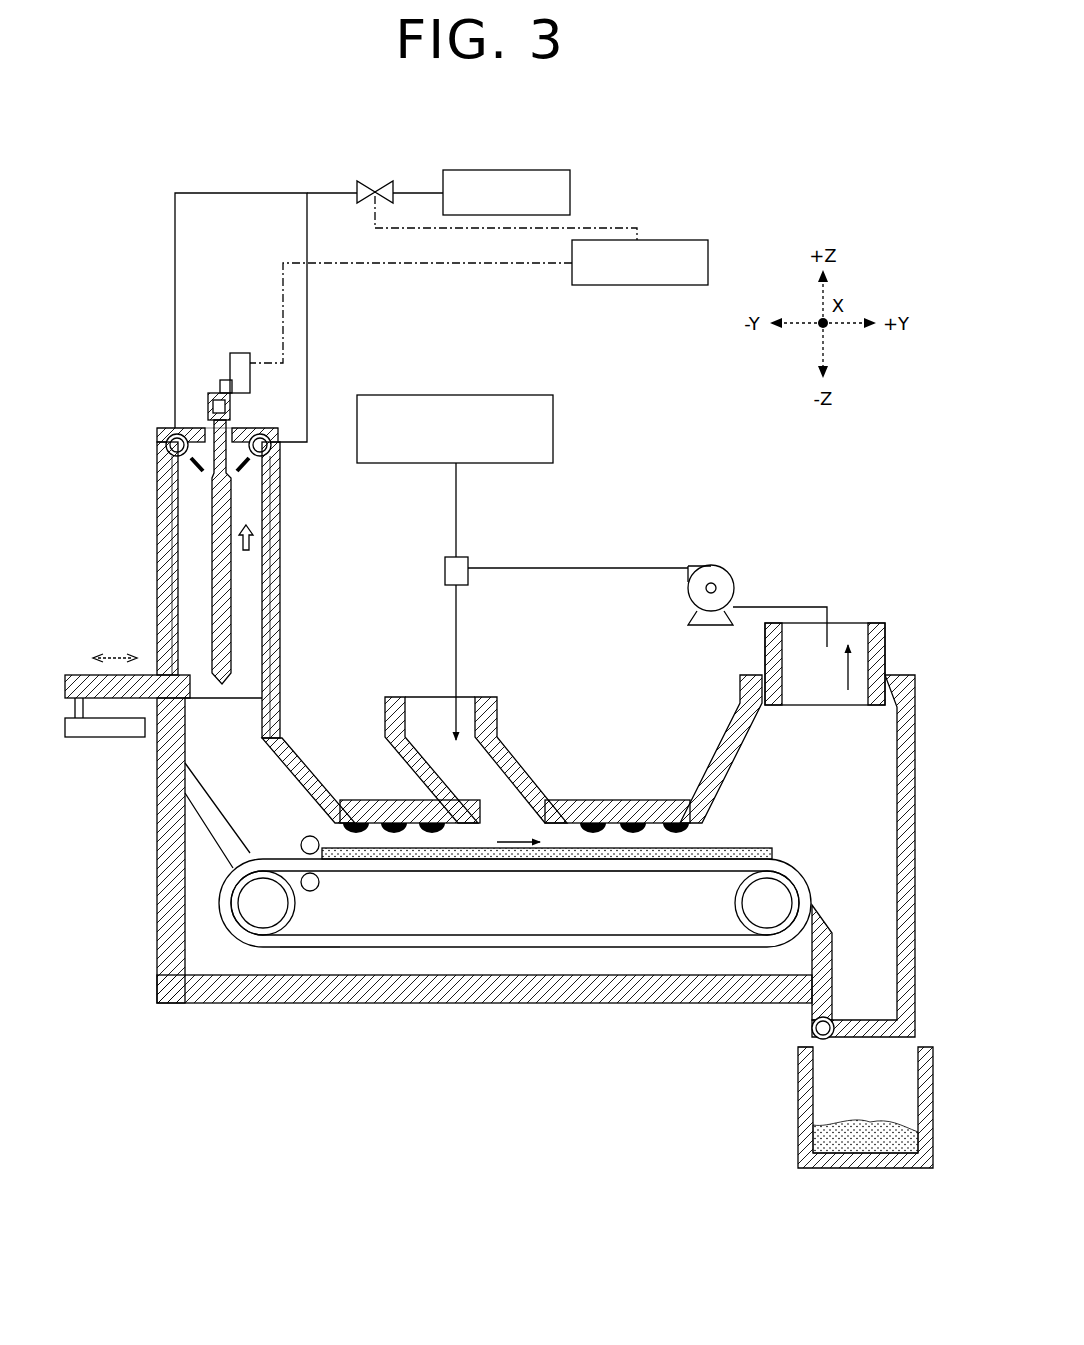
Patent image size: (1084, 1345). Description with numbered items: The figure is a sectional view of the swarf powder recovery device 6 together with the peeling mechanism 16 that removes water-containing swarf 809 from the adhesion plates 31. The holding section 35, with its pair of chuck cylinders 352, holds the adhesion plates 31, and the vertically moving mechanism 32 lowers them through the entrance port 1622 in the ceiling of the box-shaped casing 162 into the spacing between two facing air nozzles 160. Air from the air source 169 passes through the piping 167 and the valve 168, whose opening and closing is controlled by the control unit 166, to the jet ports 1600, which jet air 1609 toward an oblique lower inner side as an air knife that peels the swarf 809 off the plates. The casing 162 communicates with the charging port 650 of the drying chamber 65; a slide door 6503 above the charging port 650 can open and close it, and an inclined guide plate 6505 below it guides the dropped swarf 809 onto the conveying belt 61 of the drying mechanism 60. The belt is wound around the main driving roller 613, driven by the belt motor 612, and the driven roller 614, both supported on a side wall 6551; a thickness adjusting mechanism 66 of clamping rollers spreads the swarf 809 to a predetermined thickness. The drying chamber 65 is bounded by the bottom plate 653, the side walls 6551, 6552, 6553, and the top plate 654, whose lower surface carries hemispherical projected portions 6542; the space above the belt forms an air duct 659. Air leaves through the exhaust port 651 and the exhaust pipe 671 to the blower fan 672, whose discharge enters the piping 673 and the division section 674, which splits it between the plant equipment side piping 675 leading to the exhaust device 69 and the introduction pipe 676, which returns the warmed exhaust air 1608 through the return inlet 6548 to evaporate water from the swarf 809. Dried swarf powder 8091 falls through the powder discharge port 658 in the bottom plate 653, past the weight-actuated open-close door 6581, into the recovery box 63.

The swarf powder recovery device 6 is at (215, 1068).
The peeling mechanism 16 is at (294, 454).
The adhesion plate 31 is at (252, 410).
The vertically moving mechanism 32 is at (238, 353).
The holding section 35 is at (218, 355).
The chuck cylinder 352 is at (217, 393).
The drying mechanism 60 is at (598, 662).
The conveying belt 61 is at (468, 938).
The recovery box 63 is at (798, 1070).
The drying chamber 65 is at (532, 1020).
The thickness adjusting mechanism 66 is at (320, 883).
The exhaust device of plant equipment 69 is at (455, 395).
The air nozzle 160 is at (157, 435).
The casing 162 is at (158, 473).
The control unit 166 is at (659, 240).
The piping 167 is at (226, 193).
The valve 168 is at (388, 181).
The air source 169 is at (488, 170).
The belt motor 612 is at (262, 908).
The main driving roller 613 is at (307, 950).
The driven roller 614 is at (767, 908).
The charging port 650 is at (280, 678).
The exhaust port 651 is at (817, 683).
The bottom plate 653 is at (680, 1003).
The top plate 654 is at (633, 800).
The powder discharge port 658 is at (863, 1018).
The air duct 659 is at (597, 845).
The exhaust pipe 671 is at (812, 603).
The blower fan 672 is at (713, 566).
The piping 673 is at (630, 567).
The division section 674 is at (465, 580).
The plant equipment side piping 675 is at (457, 533).
The introduction pipe 676 is at (457, 637).
The swarf 809 is at (232, 596).
The jet port 1600 is at (168, 482).
The exhaust air 1608 is at (469, 697).
The air 1609 is at (197, 470).
The entrance port 1622 is at (175, 428).
The slide door 6503 is at (86, 675).
The guide plate 6505 is at (302, 778).
The projected portion 6542 is at (407, 800).
The return inlet 6548 is at (435, 697).
The side wall 6551 is at (727, 738).
The side wall 6552 is at (156, 960).
The side wall 6553 is at (914, 713).
The open-close door 6581 is at (858, 1030).
The swarf powder 8091 is at (873, 1168).